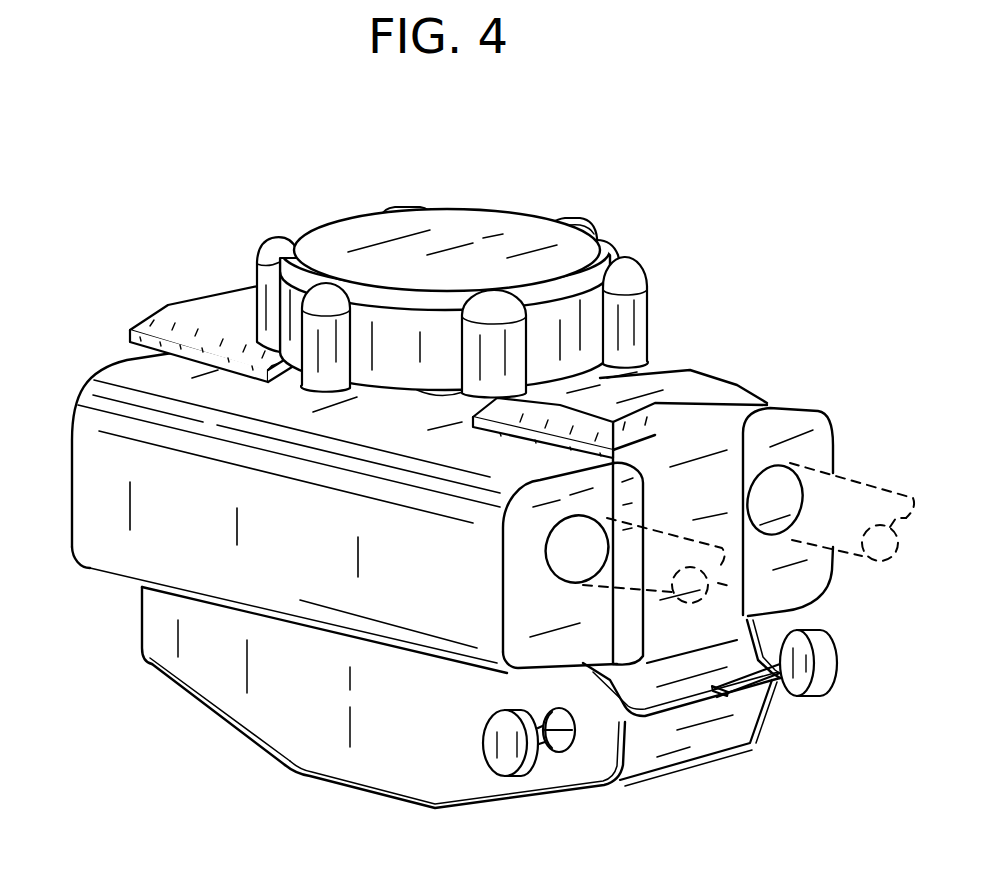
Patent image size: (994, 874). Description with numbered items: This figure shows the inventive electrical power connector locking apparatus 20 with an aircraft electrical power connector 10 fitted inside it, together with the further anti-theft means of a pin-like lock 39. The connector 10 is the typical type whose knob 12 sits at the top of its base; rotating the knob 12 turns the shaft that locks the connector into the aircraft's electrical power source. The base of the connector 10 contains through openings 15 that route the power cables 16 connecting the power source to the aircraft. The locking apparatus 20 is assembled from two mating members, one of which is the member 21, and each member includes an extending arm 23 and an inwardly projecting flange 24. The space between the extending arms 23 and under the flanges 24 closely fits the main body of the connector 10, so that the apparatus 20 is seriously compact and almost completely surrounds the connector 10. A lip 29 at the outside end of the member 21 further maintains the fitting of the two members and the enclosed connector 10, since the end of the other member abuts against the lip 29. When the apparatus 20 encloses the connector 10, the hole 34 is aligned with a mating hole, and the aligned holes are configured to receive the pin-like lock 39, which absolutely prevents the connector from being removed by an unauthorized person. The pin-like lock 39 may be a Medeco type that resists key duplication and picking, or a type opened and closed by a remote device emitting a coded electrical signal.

The electrical power connector 10 is at (70, 440).
The knob 12 is at (650, 312).
The through openings 15 is at (562, 552).
The power cables 16 is at (848, 495).
The electrical power connector locking apparatus 20 is at (186, 728).
The member 21 is at (282, 732).
The extending arm 23 is at (720, 432).
The inwardly projecting flange 24 is at (684, 380).
The lip 29 is at (737, 694).
The hole 34 is at (566, 753).
The pin-like lock 39 is at (497, 754).